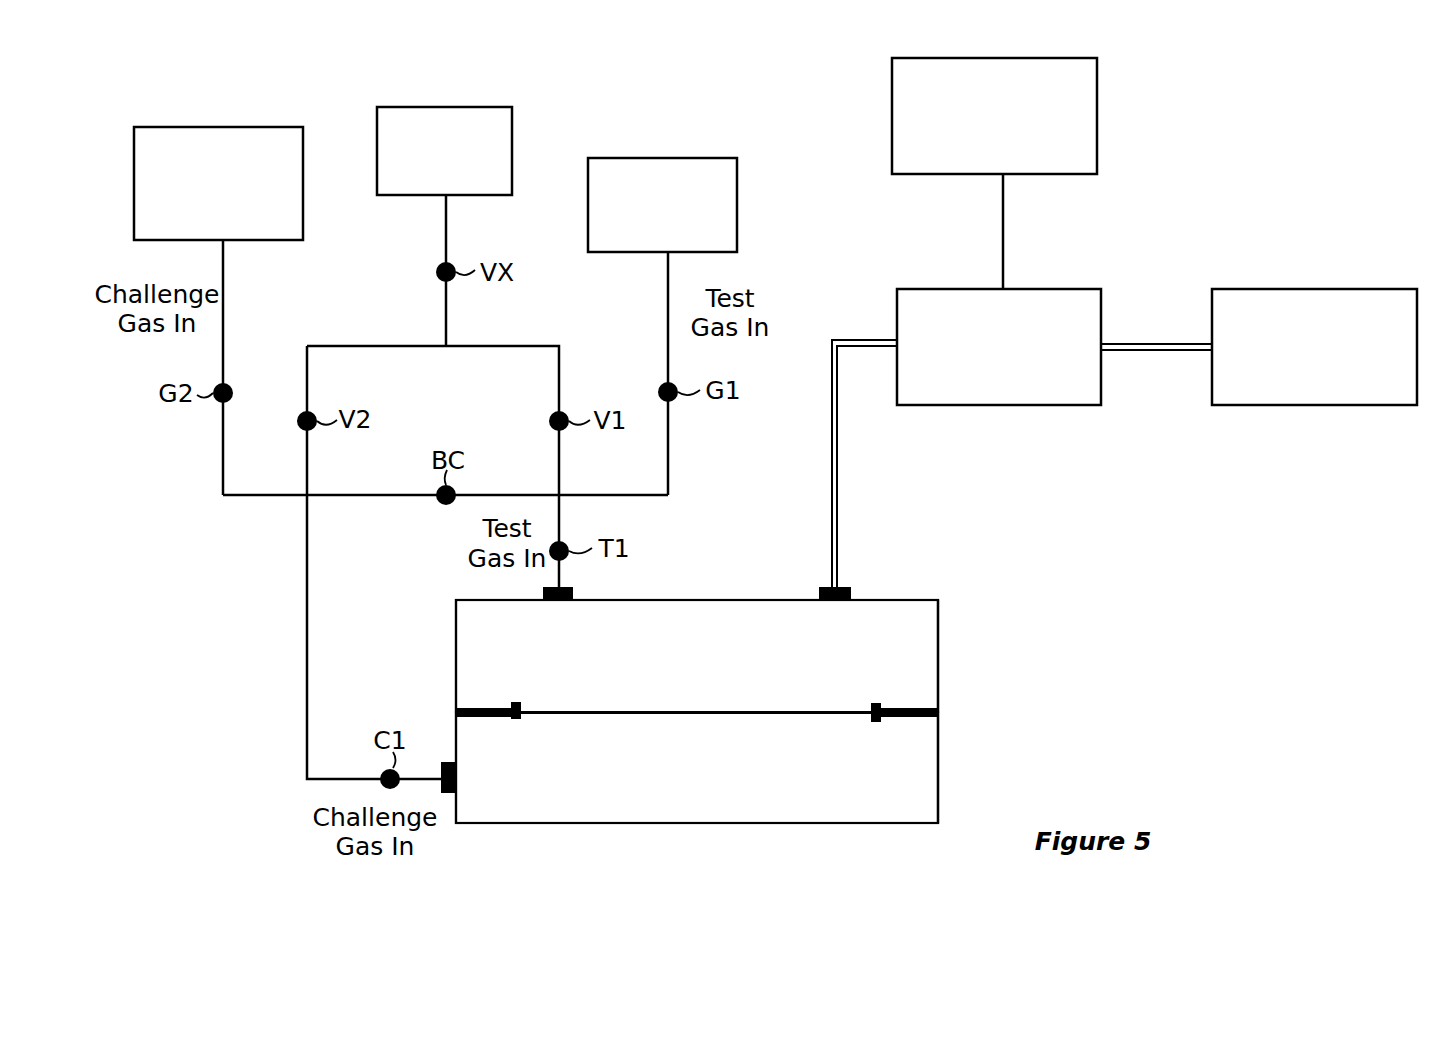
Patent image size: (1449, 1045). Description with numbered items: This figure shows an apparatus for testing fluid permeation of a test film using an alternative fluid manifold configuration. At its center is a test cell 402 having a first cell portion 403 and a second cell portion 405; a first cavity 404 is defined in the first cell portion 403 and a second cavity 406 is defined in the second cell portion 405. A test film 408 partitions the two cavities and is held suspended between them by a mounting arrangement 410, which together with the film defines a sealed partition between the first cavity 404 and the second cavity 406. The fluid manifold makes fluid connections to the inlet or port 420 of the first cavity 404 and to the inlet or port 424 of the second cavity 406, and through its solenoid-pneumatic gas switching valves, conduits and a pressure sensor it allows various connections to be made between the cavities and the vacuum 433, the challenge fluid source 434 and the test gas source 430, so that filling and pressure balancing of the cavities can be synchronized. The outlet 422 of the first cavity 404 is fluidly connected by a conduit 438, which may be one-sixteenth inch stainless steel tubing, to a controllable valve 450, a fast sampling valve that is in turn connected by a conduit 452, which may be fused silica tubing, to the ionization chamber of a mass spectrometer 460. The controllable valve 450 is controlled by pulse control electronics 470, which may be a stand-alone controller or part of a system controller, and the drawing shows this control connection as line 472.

The test cell 402 is at (938, 608).
The first cell portion 403 is at (938, 641).
The first cavity 404 is at (597, 658).
The second cell portion 405 is at (938, 756).
The second cavity 406 is at (803, 783).
The test film 408 is at (706, 712).
The mounting arrangement 410 is at (880, 700).
The inlet 420 is at (573, 594).
The outlet 422 is at (843, 587).
The inlet 424 is at (447, 762).
The test gas source 430 is at (694, 158).
The vacuum 433 is at (453, 107).
The challenge fluid source 434 is at (238, 127).
The conduit 438 is at (837, 446).
The controllable valve 450 is at (1067, 289).
The conduit 452 is at (1153, 343).
The mass spectrometer 460 is at (1360, 289).
The pulse control electronics 470 is at (1067, 58).
The control line 472 is at (1003, 222).